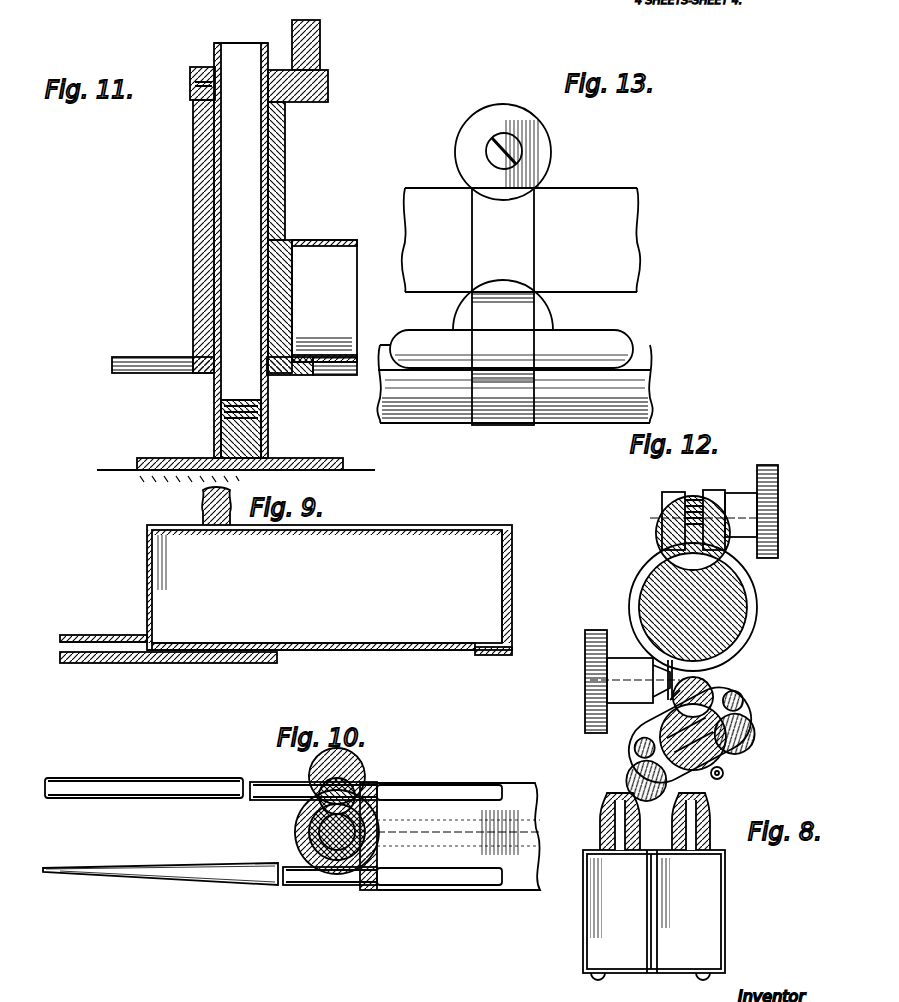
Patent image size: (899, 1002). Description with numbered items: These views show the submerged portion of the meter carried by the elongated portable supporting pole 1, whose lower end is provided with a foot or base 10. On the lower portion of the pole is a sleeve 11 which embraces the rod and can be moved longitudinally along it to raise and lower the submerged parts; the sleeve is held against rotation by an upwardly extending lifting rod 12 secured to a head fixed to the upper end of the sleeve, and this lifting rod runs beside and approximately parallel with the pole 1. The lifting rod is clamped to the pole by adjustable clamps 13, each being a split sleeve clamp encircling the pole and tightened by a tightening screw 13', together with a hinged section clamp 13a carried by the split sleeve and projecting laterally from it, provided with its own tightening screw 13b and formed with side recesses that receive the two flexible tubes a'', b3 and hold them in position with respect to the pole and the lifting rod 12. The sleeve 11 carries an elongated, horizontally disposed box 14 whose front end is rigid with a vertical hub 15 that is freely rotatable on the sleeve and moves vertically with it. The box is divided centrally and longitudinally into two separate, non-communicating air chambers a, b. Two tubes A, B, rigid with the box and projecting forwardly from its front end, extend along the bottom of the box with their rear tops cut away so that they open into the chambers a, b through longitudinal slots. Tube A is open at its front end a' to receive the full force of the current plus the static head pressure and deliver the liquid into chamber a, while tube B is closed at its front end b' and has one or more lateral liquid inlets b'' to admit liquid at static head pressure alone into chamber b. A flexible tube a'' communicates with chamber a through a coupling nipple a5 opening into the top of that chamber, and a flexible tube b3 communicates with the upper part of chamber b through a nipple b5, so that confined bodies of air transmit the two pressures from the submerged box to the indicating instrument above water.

In FIG. 11, the supporting pole 1 is at (228, 385).
In FIG. 13, the supporting pole 1 is at (630, 268).
In FIG. 12, the supporting pole 1 is at (655, 620).
In FIG. 10, the supporting pole 1 is at (337, 819).
In FIG. 11, the foot or base 10 is at (278, 462).
In FIG. 11, the sleeve 11 is at (272, 160).
In FIG. 10, the sleeve 11 is at (300, 820).
In FIG. 11, the lifting rod 12 is at (318, 33).
In FIG. 13, the lifting rod 12 is at (648, 392).
In FIG. 12, the lifting rod 12 is at (740, 756).
In FIG. 13, the adjustable clamp 13 is at (503, 276).
In FIG. 12, the adjustable clamp 13 is at (722, 595).
In FIG. 12, the tightening screw 13' is at (777, 522).
In FIG. 12, the hinged section clamp 13a is at (652, 742).
In FIG. 12, the tightening screw 13b is at (590, 682).
In FIG. 11, the box 14 is at (324, 301).
In FIG. 8, the box 14 is at (728, 884).
In FIG. 9, the box 14 is at (415, 530).
In FIG. 10, the box 14 is at (538, 838).
In FIG. 11, the hub 15 is at (286, 230).
In FIG. 10, the hub 15 is at (298, 844).
In FIG. 11, the tube A is at (128, 362).
In FIG. 8, the tube A is at (595, 991).
In FIG. 9, the tube A is at (118, 660).
In FIG. 10, the tube A is at (175, 781).
In FIG. 8, the tube B is at (688, 989).
In FIG. 10, the tube B is at (170, 866).
In FIG. 8, the air chamber a is at (617, 918).
In FIG. 9, the air chamber a is at (415, 594).
In FIG. 10, the air chamber a is at (524, 768).
In FIG. 8, the air chamber b is at (687, 924).
In FIG. 10, the air chamber b is at (514, 904).
In FIG. 10, the open front end a' is at (52, 765).
In FIG. 13, the flexible tube a'' is at (600, 432).
In FIG. 12, the flexible tube a'' is at (605, 756).
In FIG. 8, the flexible tube a'' is at (592, 789).
In FIG. 8, the coupling nipple a5 is at (600, 826).
In FIG. 10, the closed front end b' is at (52, 850).
In FIG. 10, the lateral liquid inlet b'' is at (213, 901).
In FIG. 13, the flexible tube b3 is at (620, 340).
In FIG. 12, the flexible tube b3 is at (762, 728).
In FIG. 8, the flexible tube b3 is at (702, 800).
In FIG. 8, the nipple b5 is at (710, 828).